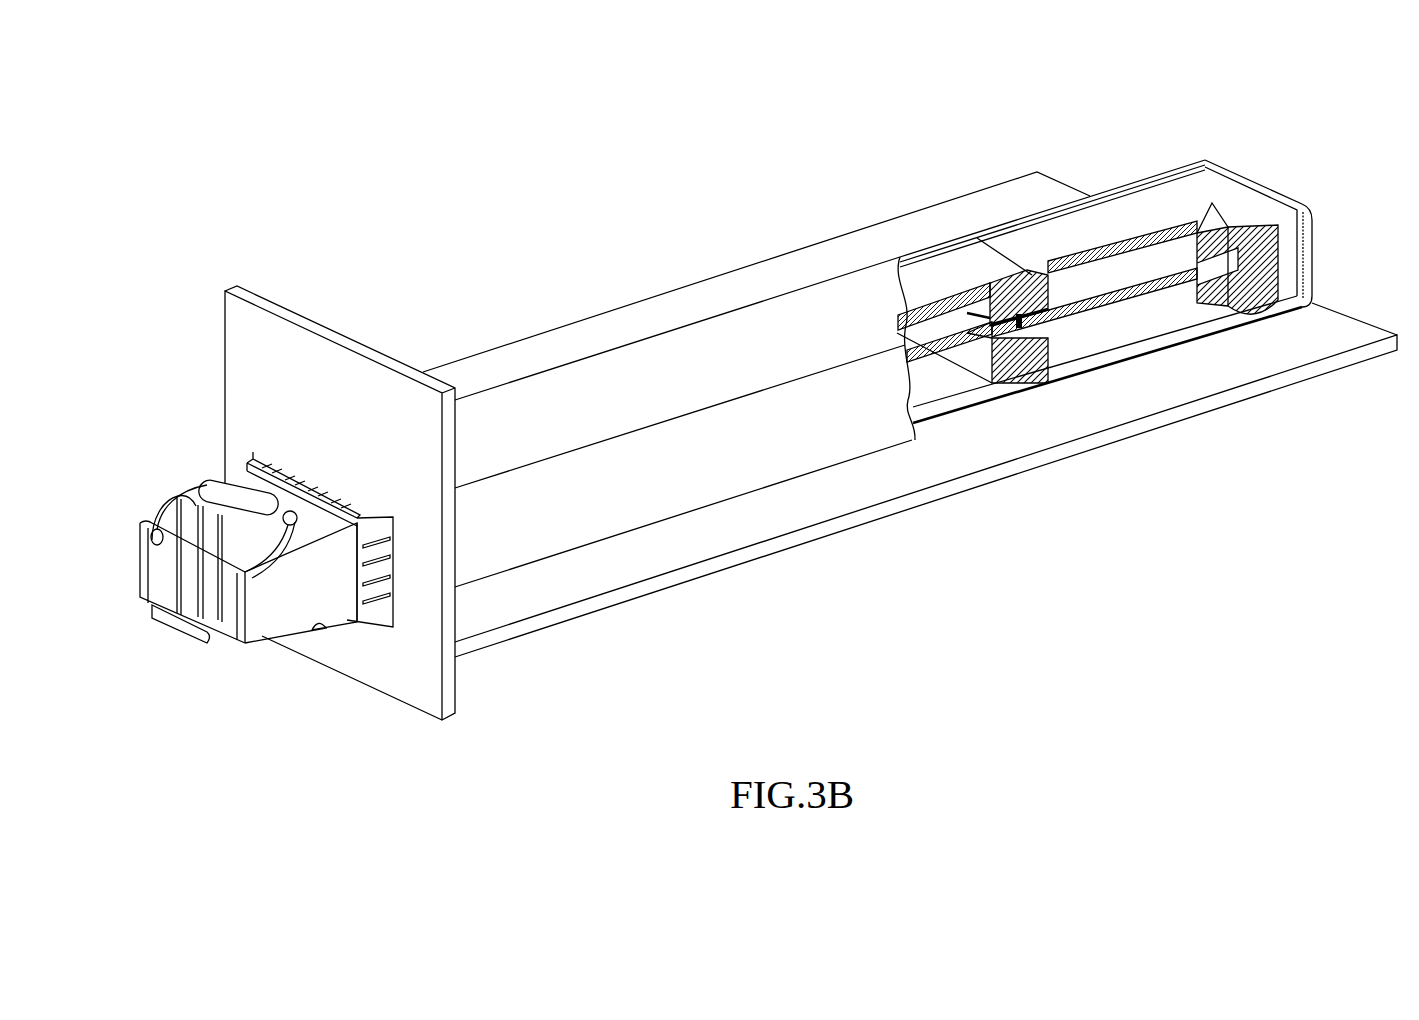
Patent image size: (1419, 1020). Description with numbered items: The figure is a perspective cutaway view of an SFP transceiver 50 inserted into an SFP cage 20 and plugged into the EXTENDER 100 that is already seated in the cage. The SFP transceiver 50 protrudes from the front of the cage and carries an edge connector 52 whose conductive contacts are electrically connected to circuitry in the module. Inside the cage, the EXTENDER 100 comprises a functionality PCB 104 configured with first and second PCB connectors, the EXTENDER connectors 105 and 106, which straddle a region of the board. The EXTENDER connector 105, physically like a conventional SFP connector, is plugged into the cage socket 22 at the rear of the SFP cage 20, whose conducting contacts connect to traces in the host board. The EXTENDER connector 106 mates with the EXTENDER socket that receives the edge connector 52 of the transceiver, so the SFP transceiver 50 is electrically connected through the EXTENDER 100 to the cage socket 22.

The SFP cage 20 is at (263, 460).
The SFP transceiver 50 is at (275, 602).
The edge connector 52 is at (936, 352).
The EXTENDER 100 is at (1060, 235).
The functionality PCB 104 is at (1145, 295).
The EXTENDER connector 105 is at (1222, 263).
The EXTENDER connector 106 is at (1042, 384).
The cage socket 22 is at (1223, 284).